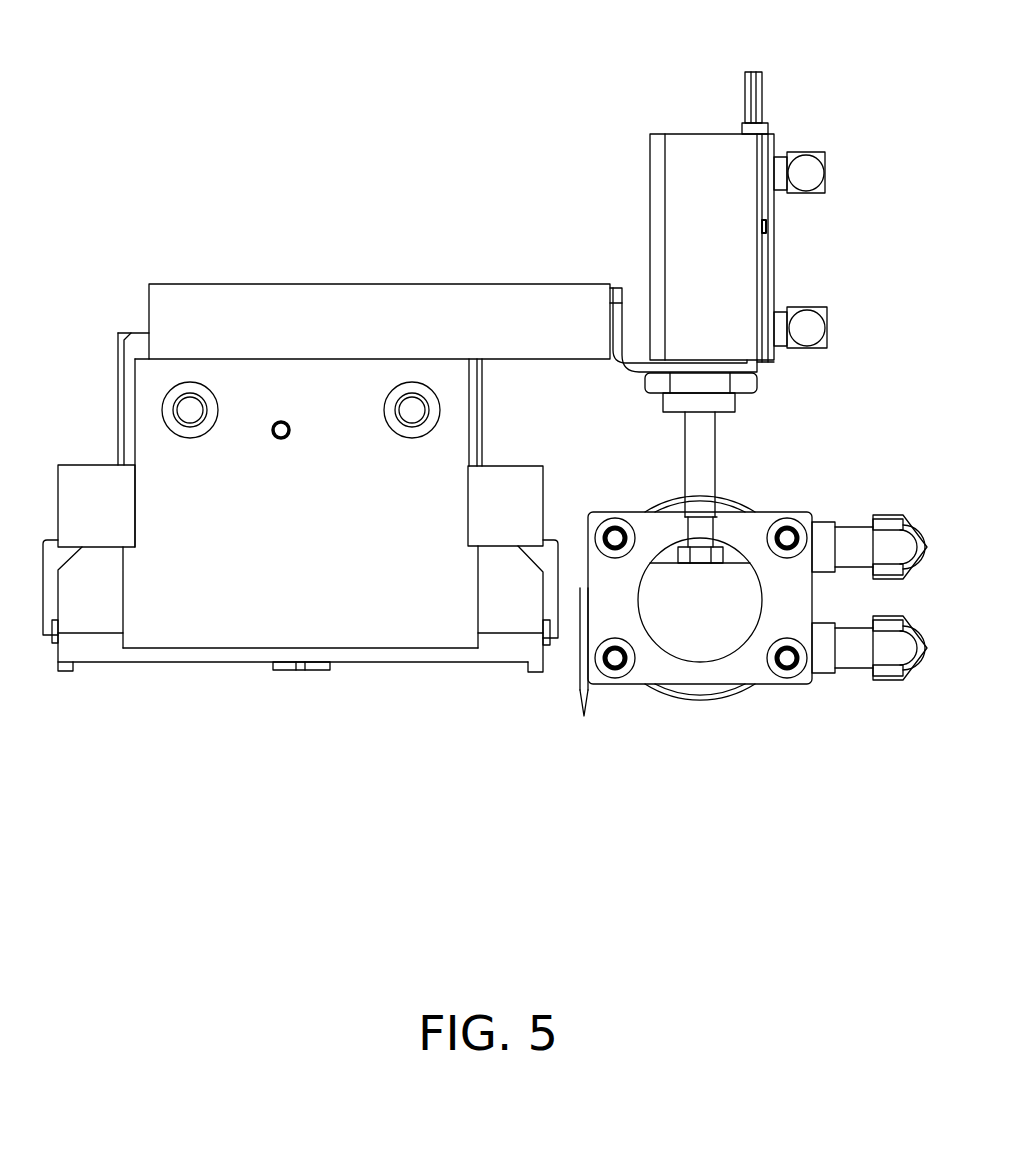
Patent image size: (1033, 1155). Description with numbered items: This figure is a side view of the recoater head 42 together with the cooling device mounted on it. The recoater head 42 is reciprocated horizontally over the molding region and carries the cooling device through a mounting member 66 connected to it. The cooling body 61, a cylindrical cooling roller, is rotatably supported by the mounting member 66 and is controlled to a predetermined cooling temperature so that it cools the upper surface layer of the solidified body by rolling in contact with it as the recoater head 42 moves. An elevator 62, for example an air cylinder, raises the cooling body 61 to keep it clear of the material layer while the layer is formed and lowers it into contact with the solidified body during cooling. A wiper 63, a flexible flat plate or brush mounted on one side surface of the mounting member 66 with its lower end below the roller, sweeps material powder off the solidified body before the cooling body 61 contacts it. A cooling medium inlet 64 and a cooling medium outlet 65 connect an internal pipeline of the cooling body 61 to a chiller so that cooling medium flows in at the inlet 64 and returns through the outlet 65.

The recoater head 42 is at (147, 442).
The cooling body 61 is at (703, 702).
The elevator 62 is at (682, 208).
The wiper 63 is at (580, 695).
The cooling medium inlet 64 is at (888, 543).
The cooling medium outlet 65 is at (888, 650).
The mounting member 66 is at (652, 663).